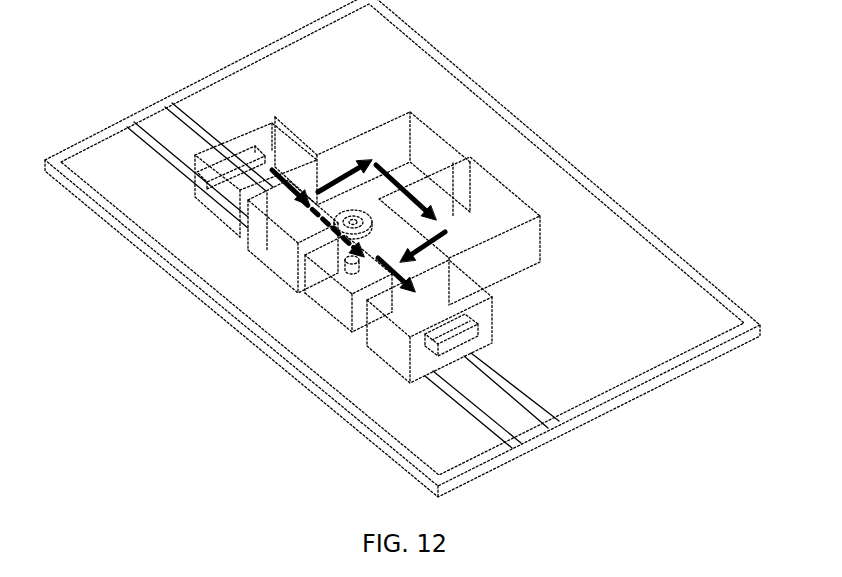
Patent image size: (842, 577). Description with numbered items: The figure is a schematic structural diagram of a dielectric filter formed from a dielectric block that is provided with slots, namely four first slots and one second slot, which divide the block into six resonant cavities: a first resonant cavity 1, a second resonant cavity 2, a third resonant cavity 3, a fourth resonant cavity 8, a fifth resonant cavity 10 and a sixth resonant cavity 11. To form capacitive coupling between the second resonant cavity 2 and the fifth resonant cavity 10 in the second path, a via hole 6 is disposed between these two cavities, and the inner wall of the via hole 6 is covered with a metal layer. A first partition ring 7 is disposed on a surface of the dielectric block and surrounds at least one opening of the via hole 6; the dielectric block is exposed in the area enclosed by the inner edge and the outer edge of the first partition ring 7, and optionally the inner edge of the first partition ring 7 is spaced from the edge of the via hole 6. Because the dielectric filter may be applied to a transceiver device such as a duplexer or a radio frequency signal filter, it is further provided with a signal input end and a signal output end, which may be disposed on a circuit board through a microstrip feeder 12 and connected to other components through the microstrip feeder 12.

The first resonant cavity 1 is at (225, 217).
The second resonant cavity 2 is at (277, 250).
The third resonant cavity 3 is at (432, 145).
The via hole 6 is at (360, 258).
The first partition ring 7 is at (372, 222).
The fourth resonant cavity 8 is at (500, 215).
The fifth resonant cavity 10 is at (332, 300).
The sixth resonant cavity 11 is at (387, 347).
The microstrip feeder 12 is at (528, 397).